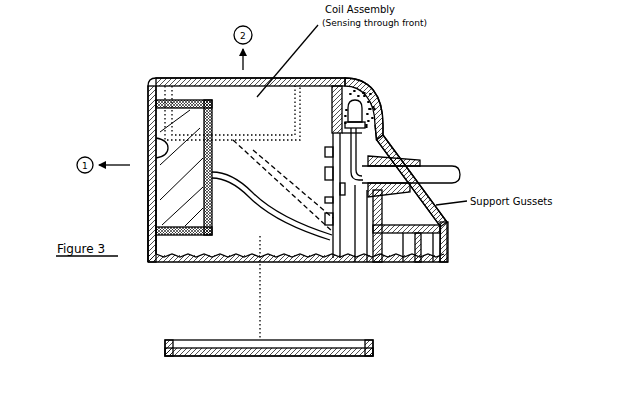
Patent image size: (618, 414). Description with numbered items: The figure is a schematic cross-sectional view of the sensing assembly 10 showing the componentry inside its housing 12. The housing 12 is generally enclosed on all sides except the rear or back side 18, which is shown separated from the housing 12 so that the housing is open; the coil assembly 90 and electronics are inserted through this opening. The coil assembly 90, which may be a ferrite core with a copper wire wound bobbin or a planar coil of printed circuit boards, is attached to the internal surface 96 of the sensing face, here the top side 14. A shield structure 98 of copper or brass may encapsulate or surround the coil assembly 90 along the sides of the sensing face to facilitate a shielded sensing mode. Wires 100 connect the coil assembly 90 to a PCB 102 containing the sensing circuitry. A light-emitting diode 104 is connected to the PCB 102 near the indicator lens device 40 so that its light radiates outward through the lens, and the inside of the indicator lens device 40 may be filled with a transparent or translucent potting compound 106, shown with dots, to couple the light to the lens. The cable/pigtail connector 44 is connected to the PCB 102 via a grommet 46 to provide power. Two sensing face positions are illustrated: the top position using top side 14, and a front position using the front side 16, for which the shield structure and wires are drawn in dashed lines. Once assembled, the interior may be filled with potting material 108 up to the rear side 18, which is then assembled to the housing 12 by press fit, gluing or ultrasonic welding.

The sensing assembly 10 is at (163, 62).
The housing 12 is at (147, 90).
The top side 14 is at (148, 194).
The front side 16 is at (217, 78).
The rear or back side 18 is at (374, 343).
The indicator lens device 40 is at (362, 80).
The cable/pigtail connector 44 is at (446, 167).
The grommet 46 is at (410, 158).
The coil assembly 90 is at (180, 220).
The internal surface 96 is at (158, 147).
The shield structure 98 is at (212, 238).
The wires 100 is at (262, 262).
The PCB 102 is at (330, 258).
The light-emitting diode 104 is at (368, 108).
The transparent and/or translucent potting compound 106 is at (372, 121).
The potting material 108 is at (366, 262).